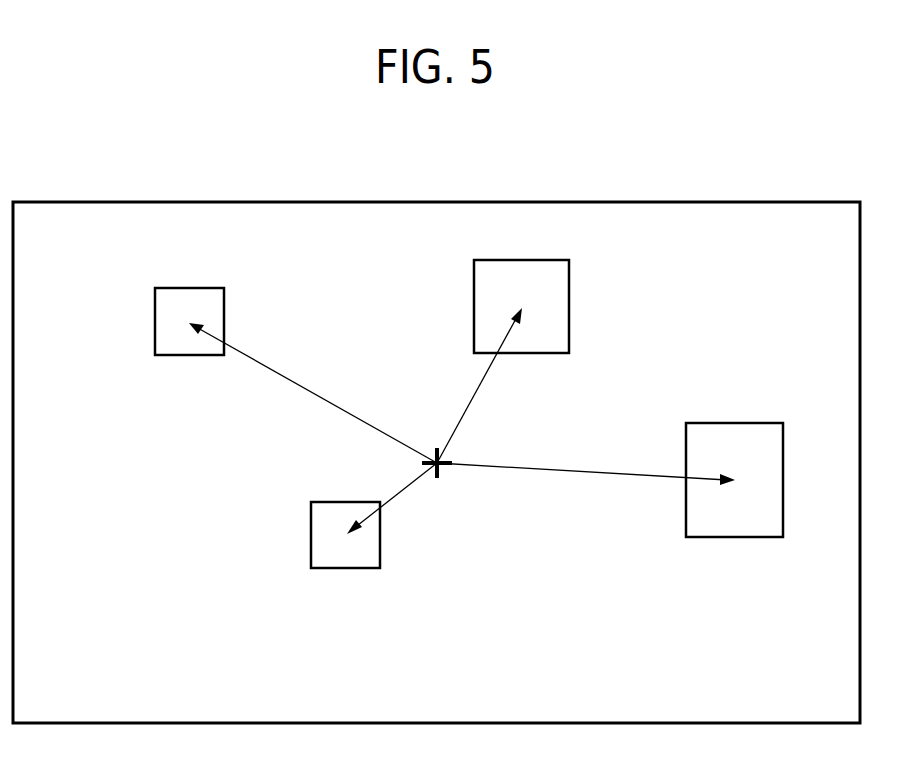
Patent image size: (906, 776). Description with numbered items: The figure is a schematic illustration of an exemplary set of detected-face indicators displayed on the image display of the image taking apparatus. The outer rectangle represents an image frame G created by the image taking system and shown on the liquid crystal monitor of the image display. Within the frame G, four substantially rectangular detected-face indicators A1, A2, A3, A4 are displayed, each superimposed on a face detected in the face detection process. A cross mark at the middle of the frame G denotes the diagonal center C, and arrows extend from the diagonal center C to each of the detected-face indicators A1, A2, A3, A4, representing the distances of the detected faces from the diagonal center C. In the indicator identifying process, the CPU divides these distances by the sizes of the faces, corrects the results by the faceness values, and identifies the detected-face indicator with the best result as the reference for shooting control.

The image frame G is at (428, 201).
The diagonal center C is at (449, 476).
The detected-face indicator A1 is at (154, 322).
The detected-face indicator A2 is at (310, 535).
The detected-face indicator A3 is at (571, 305).
The detected-face indicator A4 is at (785, 480).